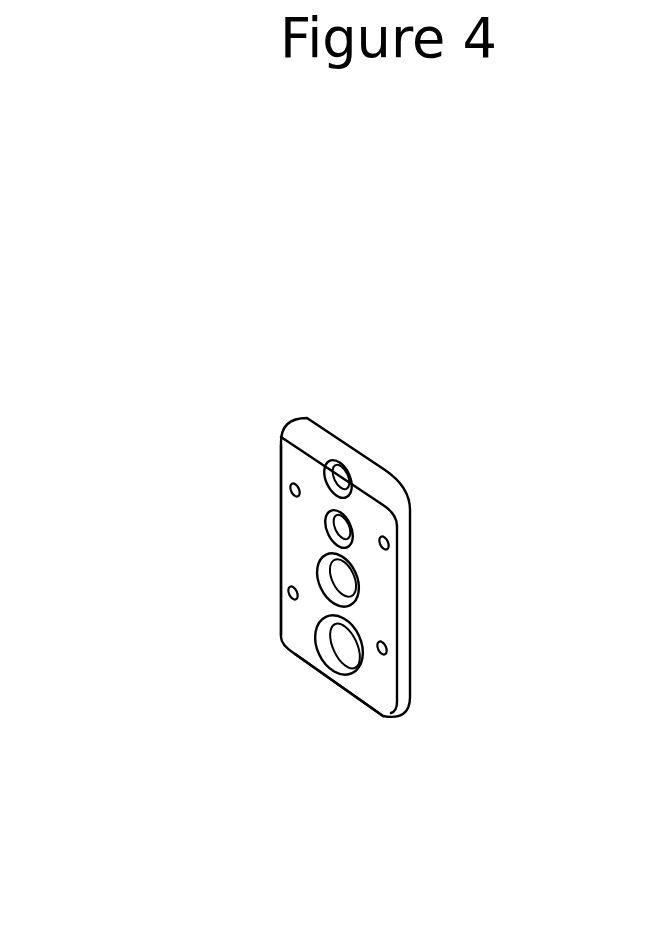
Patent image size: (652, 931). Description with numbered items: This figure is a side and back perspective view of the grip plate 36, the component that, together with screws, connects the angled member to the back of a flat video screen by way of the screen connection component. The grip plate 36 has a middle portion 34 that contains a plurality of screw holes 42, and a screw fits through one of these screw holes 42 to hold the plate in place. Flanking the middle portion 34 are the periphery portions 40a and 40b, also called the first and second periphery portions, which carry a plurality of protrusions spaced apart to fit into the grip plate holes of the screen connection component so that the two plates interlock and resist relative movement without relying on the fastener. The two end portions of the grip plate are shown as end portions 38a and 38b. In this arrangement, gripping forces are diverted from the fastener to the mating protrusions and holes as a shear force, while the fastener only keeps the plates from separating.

The middle portion 34 is at (371, 489).
The grip plate 36 is at (237, 528).
The end portion 38a is at (348, 404).
The end portion 38b is at (323, 711).
The periphery portion 40a is at (408, 583).
The periphery portion 40b is at (261, 574).
The screw holes 42 is at (325, 652).